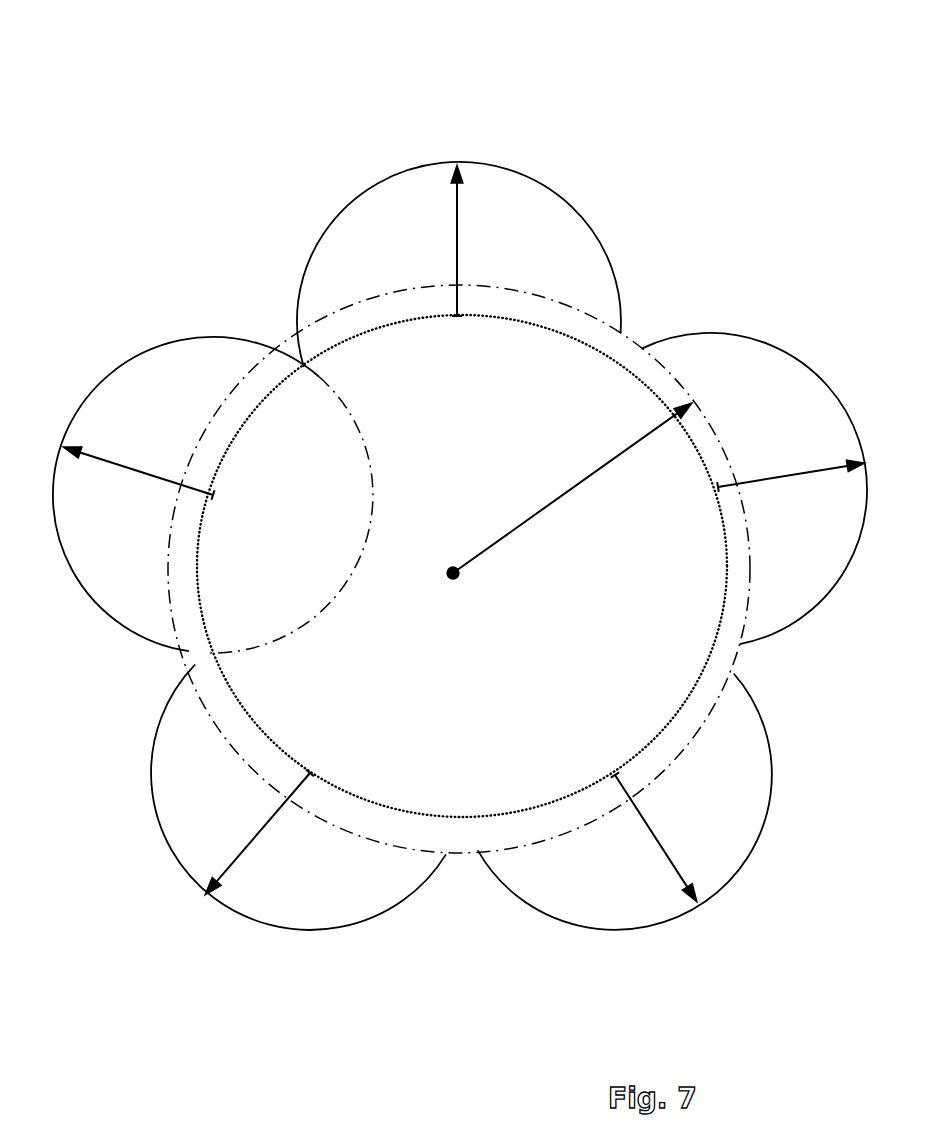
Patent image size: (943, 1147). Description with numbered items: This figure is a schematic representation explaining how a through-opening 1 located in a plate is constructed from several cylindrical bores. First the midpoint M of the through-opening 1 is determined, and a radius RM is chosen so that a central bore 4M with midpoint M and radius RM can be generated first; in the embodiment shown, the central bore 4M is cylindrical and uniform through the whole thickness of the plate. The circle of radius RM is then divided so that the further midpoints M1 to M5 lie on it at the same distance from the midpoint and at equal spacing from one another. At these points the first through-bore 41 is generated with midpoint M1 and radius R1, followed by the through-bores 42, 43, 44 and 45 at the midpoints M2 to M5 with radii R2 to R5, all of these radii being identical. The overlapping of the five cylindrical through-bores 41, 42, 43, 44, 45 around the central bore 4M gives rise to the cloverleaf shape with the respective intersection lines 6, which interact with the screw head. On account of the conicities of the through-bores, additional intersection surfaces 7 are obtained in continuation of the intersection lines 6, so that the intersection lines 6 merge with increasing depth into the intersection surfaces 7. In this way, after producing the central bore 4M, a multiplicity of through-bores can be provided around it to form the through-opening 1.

The through-opening 1 is at (162, 15).
The first through-bore 41 is at (118, 364).
The second through-bore 42 is at (405, 170).
The third through-bore 43 is at (818, 378).
The fourth through-bore 44 is at (742, 868).
The fifth through-bore 45 is at (158, 840).
The central bore 4M is at (472, 717).
The intersection lines 6 is at (482, 597).
The intersection surfaces 7 is at (298, 333).